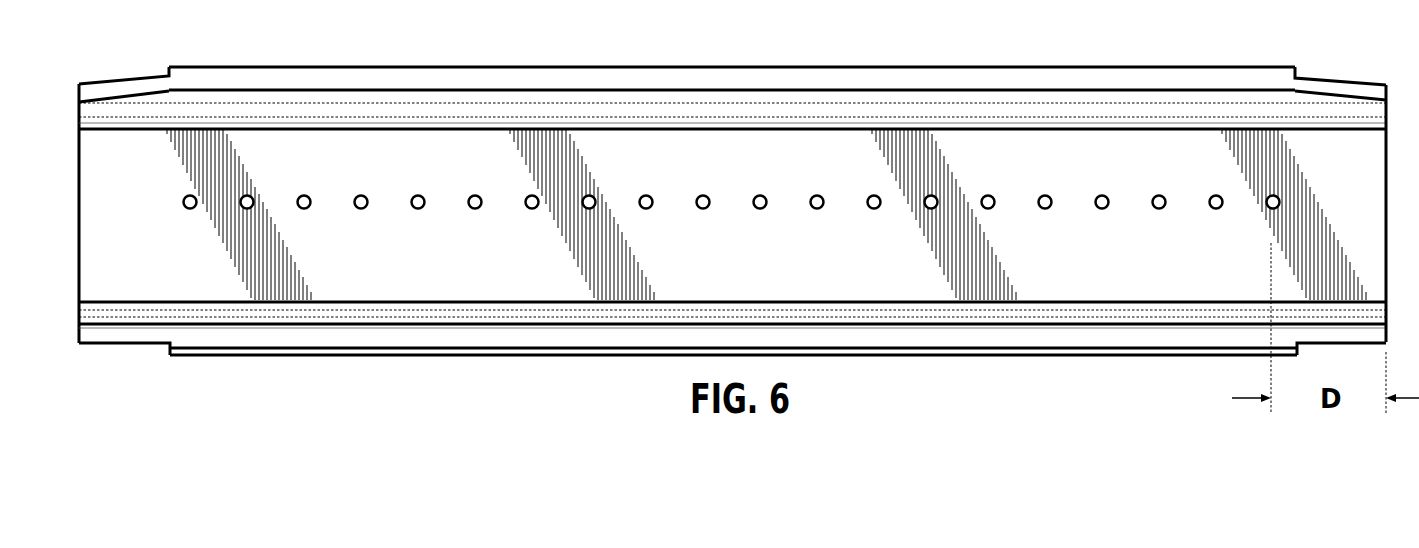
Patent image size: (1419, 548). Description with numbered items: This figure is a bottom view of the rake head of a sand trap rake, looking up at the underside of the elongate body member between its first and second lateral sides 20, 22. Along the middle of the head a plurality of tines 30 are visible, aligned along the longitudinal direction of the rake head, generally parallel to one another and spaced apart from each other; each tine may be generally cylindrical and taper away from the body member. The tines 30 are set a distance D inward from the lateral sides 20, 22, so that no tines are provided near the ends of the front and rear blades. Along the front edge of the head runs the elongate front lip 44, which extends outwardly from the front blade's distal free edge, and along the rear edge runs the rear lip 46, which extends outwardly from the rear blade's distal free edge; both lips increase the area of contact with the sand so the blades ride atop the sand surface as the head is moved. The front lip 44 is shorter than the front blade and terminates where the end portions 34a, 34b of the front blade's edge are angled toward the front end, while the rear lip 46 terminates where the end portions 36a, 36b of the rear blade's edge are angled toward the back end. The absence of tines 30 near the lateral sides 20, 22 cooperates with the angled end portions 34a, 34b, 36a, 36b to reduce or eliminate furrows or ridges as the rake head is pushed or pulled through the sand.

The first lateral side 20 is at (79, 158).
The second lateral side 22 is at (1386, 160).
The tines 30 is at (997, 202).
The angled portion of front blade distal free edge 34a is at (107, 83).
The angled portion of front blade distal free edge 34b is at (1313, 80).
The angled portion of rear blade distal free edge 36a is at (112, 345).
The angled portion of rear blade distal free edge 36b is at (1318, 344).
The front lip 44 is at (1005, 73).
The rear lip 46 is at (880, 349).